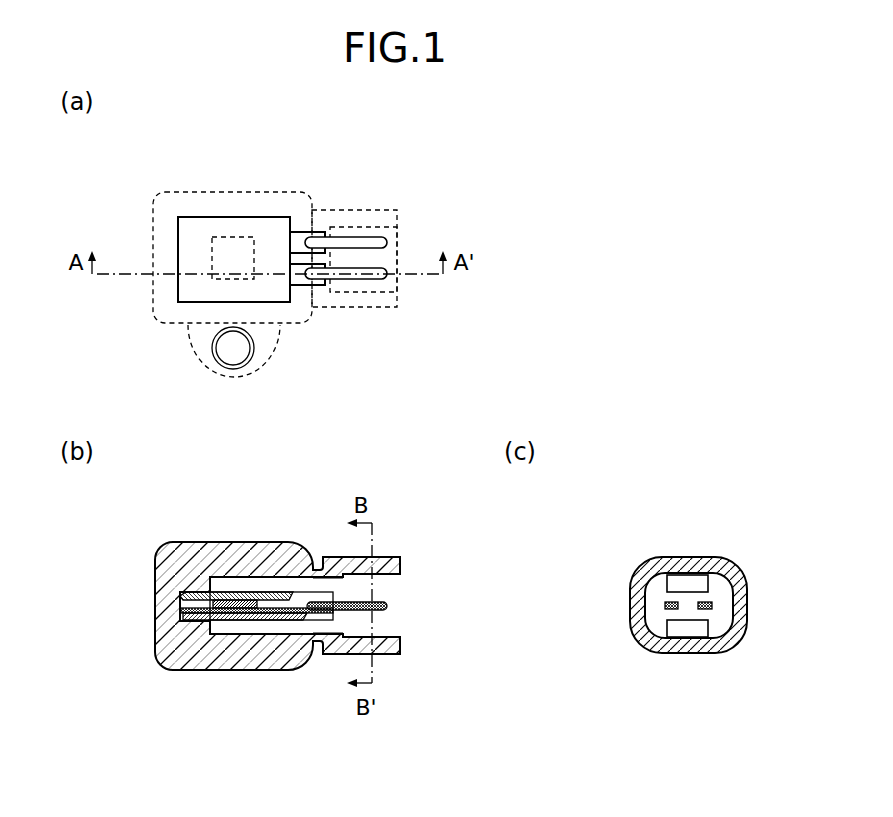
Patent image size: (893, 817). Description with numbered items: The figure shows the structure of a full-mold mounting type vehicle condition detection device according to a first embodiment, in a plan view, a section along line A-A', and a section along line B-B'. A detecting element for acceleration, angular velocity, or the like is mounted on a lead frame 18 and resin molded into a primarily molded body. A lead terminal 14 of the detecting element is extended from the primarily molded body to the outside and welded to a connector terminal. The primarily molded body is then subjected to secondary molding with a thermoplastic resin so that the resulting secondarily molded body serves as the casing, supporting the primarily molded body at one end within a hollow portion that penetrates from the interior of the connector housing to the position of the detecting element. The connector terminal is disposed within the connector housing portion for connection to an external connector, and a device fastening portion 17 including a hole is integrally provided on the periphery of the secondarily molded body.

The lead terminal 14 is at (302, 285).
The device fastening portion 17 is at (211, 356).
The lead frame 18 is at (180, 611).